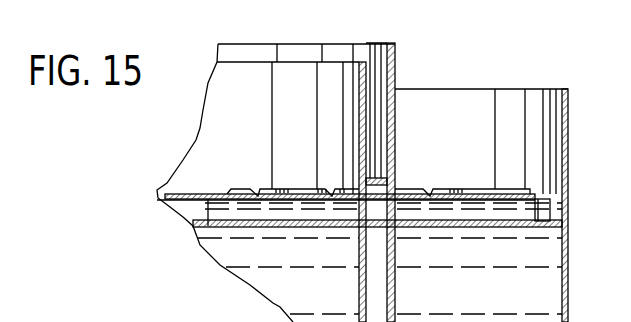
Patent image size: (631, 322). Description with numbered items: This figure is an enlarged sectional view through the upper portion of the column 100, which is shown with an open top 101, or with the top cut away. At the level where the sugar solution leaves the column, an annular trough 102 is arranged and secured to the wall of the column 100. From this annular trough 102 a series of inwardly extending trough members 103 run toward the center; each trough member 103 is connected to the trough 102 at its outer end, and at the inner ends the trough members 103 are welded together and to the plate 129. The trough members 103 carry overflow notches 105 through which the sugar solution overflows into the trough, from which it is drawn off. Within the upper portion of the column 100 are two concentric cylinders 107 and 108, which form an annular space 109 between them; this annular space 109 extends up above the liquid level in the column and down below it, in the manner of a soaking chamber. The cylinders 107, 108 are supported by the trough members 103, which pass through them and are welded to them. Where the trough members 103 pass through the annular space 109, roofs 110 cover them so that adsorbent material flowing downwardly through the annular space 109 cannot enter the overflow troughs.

The column 100 is at (563, 121).
The open top 101 is at (540, 89).
The annular trough 102 is at (553, 208).
The trough member 103 is at (437, 228).
The overflow notch 105 is at (429, 192).
The concentric cylinder 107 is at (393, 63).
The concentric cylinder 108 is at (362, 88).
The annular space 109 is at (371, 50).
The roof 110 is at (378, 179).
The plate 129 is at (186, 194).